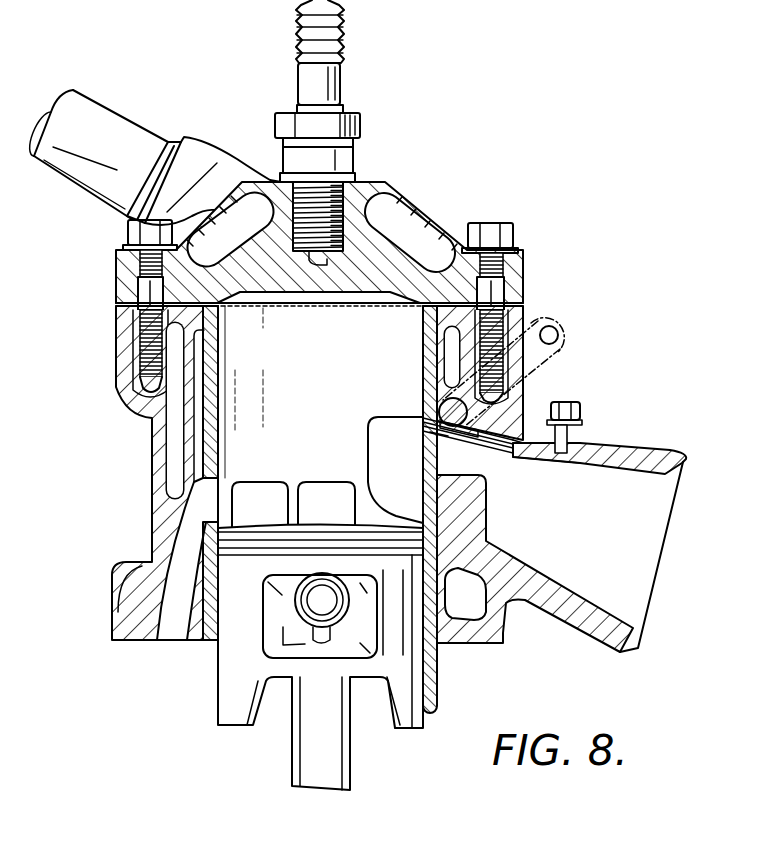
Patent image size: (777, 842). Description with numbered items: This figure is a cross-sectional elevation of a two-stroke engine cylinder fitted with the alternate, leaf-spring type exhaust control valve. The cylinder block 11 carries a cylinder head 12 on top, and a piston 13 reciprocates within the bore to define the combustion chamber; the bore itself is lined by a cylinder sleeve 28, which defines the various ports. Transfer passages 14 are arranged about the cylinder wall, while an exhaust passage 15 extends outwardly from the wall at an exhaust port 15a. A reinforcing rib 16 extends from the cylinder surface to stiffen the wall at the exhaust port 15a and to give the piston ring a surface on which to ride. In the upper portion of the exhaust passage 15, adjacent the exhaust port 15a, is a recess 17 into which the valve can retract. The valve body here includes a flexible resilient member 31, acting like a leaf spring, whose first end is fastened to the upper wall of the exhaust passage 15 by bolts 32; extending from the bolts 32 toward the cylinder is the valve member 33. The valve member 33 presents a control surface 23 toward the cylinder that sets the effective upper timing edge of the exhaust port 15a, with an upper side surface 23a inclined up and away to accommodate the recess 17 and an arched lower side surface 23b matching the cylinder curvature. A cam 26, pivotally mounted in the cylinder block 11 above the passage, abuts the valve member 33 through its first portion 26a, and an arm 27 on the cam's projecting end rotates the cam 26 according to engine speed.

The cylinder block 11 is at (128, 393).
The cylinder head 12 is at (425, 212).
The piston 13 is at (227, 678).
The transfer passages 14 is at (207, 525).
The exhaust passage 15 is at (648, 527).
The exhaust port 15a is at (388, 455).
The reinforcing rib 16 is at (486, 531).
The recess 17 is at (531, 428).
The control surface 23 is at (416, 410).
The upper side surface 23a is at (437, 416).
The lower side surface 23b is at (424, 422).
The cam 26 is at (440, 398).
The first portion 26a is at (460, 439).
The arm 27 is at (545, 316).
The cylinder sleeve 28 is at (220, 338).
The flexible resilient member 31 is at (528, 458).
The bolts 32 is at (583, 438).
The valve member 33 is at (445, 436).